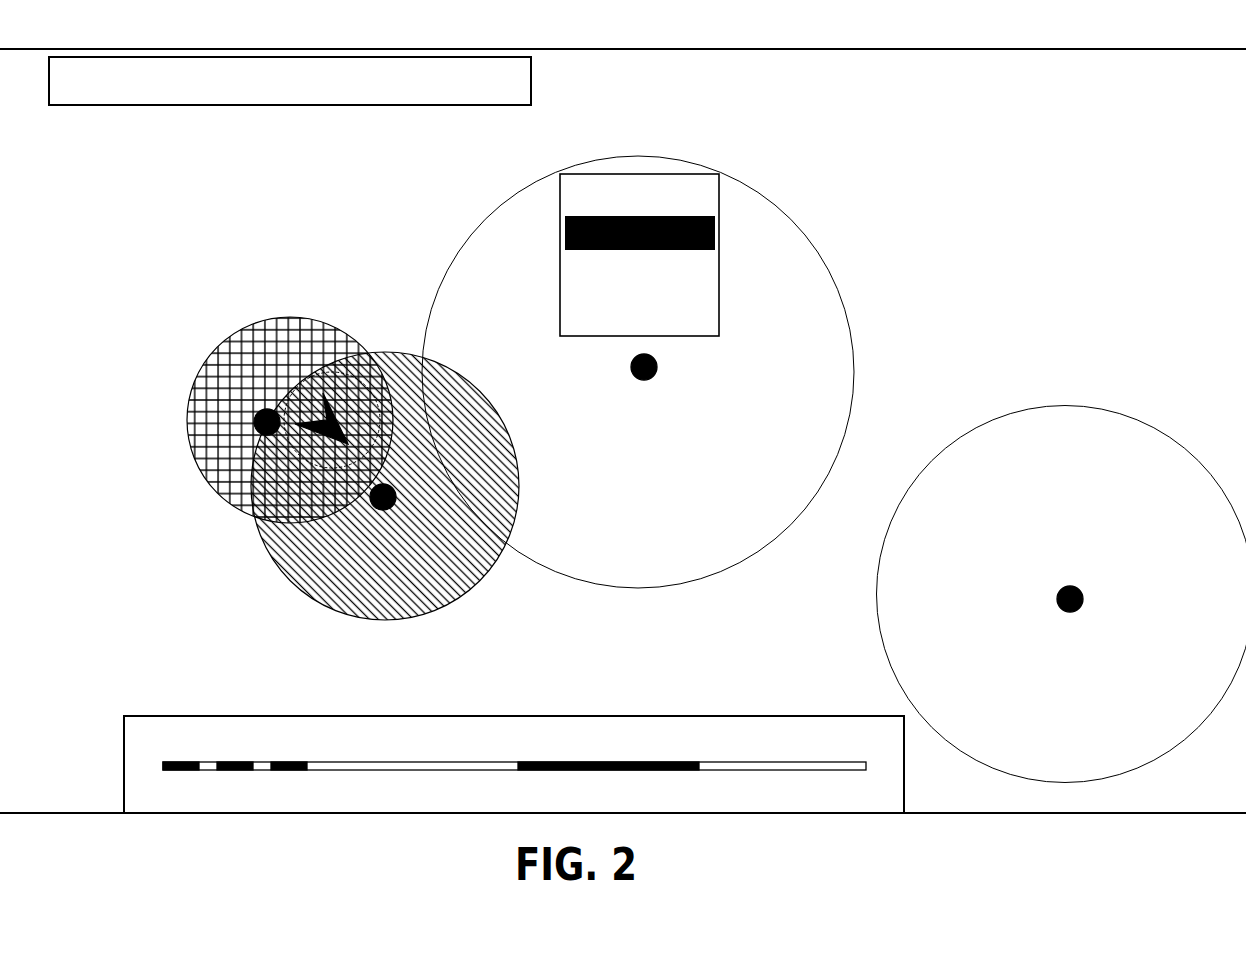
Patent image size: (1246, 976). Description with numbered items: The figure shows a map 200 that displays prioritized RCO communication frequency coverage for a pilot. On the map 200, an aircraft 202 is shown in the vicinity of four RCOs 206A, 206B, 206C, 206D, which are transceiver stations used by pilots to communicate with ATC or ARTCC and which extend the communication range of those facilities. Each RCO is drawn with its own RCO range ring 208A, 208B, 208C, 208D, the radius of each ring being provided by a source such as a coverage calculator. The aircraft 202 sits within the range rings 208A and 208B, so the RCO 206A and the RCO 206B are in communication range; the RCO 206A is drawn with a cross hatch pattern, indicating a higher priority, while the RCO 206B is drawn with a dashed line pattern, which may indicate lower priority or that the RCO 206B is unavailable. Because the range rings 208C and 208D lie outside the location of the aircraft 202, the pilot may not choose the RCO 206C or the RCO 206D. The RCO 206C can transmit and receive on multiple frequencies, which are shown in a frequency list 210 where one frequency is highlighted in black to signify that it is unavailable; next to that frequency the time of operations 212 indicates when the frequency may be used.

The map 200 is at (1090, 29).
The aircraft 202 is at (347, 444).
The RCO 206A is at (255, 421).
The RCO 206B is at (380, 509).
The RCO 206C is at (684, 351).
The RCO 206D is at (1072, 611).
The RCO range ring 208A is at (231, 336).
The RCO range ring 208B is at (400, 619).
The RCO range ring 208C is at (850, 323).
The RCO range ring 208D is at (1067, 405).
The frequency list 210 is at (719, 300).
The time of operations 212 is at (818, 215).